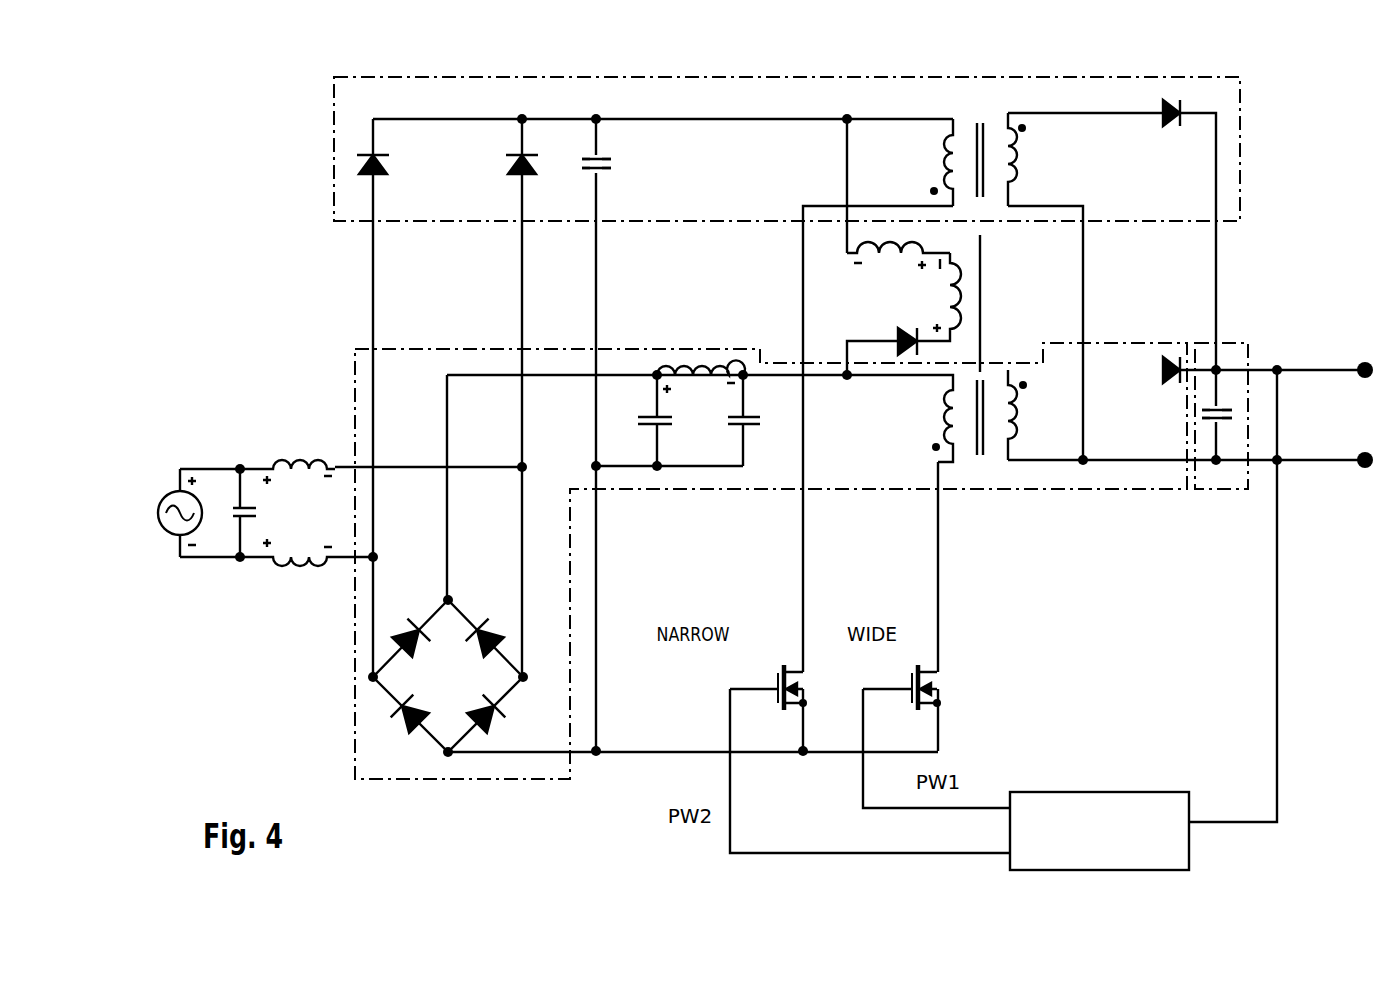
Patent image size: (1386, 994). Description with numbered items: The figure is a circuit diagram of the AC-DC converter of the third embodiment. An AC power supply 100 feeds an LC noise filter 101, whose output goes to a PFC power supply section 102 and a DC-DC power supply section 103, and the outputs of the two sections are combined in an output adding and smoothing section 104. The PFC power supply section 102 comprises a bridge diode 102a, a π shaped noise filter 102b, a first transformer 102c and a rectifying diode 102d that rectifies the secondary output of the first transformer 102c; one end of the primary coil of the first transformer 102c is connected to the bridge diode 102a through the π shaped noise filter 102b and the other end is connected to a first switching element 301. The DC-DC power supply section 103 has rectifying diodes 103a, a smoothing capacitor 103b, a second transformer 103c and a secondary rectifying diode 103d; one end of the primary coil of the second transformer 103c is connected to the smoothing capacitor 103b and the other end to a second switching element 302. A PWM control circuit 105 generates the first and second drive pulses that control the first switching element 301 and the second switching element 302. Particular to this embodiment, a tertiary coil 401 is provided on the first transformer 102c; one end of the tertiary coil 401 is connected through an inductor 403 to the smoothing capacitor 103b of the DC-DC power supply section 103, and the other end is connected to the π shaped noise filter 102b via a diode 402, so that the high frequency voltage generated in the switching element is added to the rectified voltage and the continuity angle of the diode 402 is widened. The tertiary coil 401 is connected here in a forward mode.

The AC power supply 100 is at (211, 545).
The LC noise filter 101 is at (284, 541).
The PFC power supply section 102 is at (370, 780).
The bridge diode 102a is at (465, 676).
The π shaped noise filter 102b is at (699, 413).
The first transformer 102c is at (979, 424).
The rectifying diode 102d is at (1145, 385).
The DC-DC power supply section 103 is at (702, 77).
The rectifying diodes 103a is at (447, 172).
The smoothing capacitor 103b is at (622, 175).
The second transformer 103c is at (978, 149).
The secondary rectifying diode 103d is at (1144, 128).
The output adding and smoothing section 104 is at (1202, 490).
The PWM control circuit 105 is at (1123, 792).
The first switching element 301 is at (957, 700).
The second switching element 302 is at (740, 699).
The tertiary coil 401 is at (929, 297).
The diode 402 is at (869, 346).
The inductor 403 is at (884, 268).